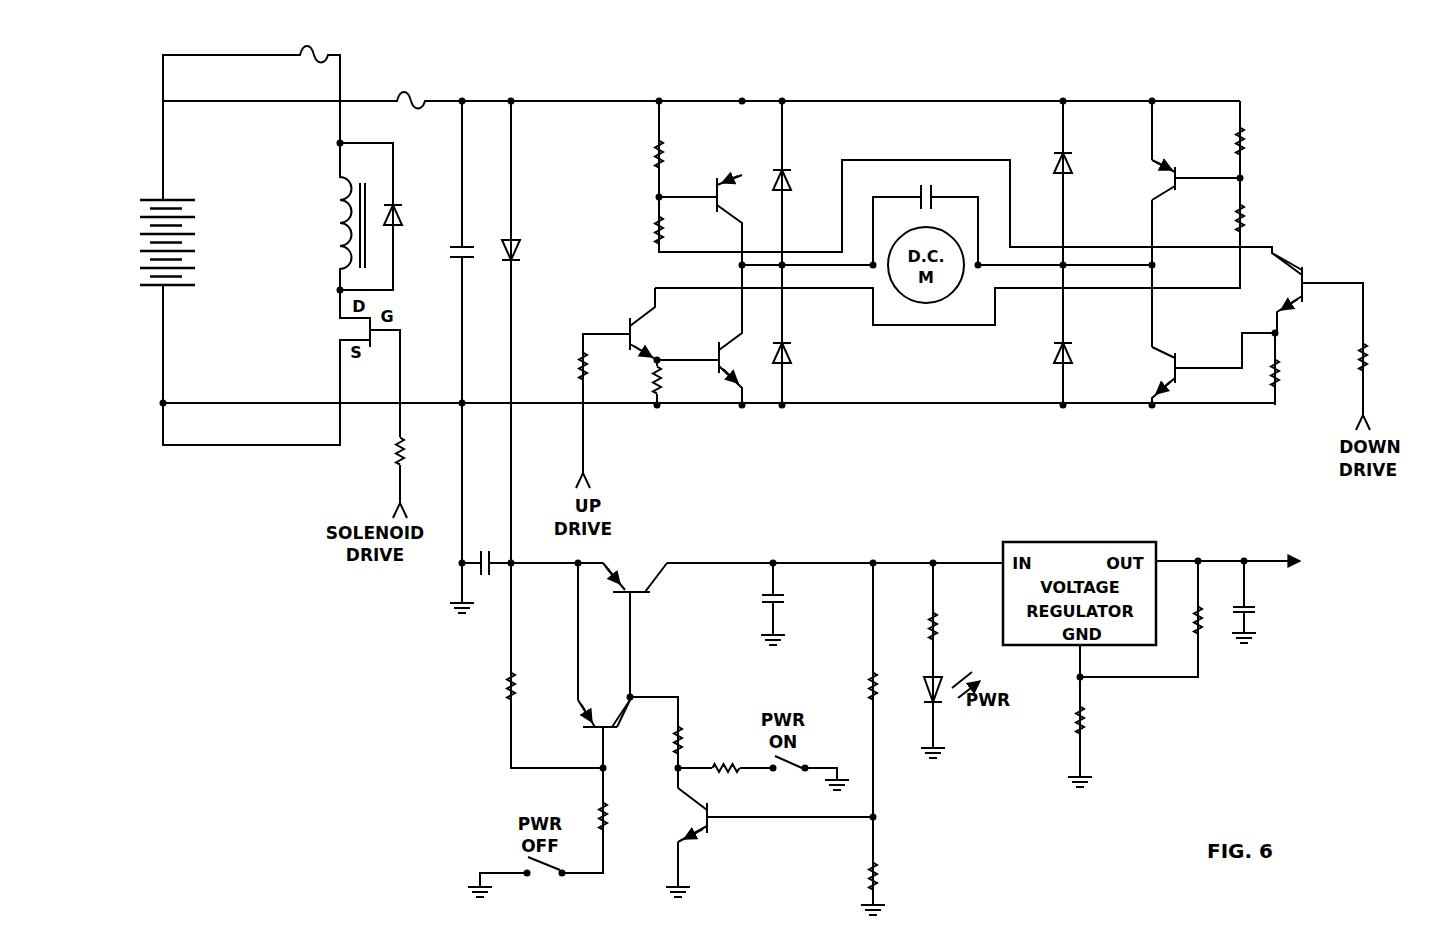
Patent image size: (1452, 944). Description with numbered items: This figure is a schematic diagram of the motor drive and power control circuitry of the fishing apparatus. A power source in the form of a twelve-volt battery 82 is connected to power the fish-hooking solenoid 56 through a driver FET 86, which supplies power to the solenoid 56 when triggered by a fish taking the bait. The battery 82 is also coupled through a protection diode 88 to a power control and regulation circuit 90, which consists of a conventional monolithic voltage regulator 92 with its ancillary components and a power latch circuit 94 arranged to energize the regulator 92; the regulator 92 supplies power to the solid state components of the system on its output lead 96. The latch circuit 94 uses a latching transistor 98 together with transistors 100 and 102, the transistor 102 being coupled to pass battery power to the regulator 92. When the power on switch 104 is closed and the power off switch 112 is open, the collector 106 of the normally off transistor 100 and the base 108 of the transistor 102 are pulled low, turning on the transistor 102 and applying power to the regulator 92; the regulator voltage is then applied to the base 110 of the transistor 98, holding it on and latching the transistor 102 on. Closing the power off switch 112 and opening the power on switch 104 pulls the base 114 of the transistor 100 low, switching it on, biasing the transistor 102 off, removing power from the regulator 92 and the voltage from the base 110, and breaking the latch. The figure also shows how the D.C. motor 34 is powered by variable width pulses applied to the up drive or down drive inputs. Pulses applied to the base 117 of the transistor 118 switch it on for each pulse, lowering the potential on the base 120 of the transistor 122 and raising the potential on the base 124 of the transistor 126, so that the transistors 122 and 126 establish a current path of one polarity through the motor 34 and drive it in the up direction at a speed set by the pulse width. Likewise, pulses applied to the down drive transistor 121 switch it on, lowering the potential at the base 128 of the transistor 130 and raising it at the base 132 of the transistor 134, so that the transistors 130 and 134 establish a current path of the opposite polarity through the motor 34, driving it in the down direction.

The D.C. motor 34 is at (935, 303).
The fish-hooking solenoid 56 is at (337, 217).
The battery 82 is at (205, 272).
The driver FET 86 is at (337, 326).
The protection diode 88 is at (516, 262).
The power control and regulation circuit 90 is at (988, 821).
The voltage regulator 92 is at (1066, 544).
The power latch circuit 94 is at (725, 734).
The output lead 96 is at (1215, 563).
The latching transistor 98 is at (712, 836).
The transistor 100 is at (603, 716).
The transistor 102 is at (653, 598).
The power on switch 104 is at (799, 756).
The collector 106 is at (625, 712).
The base 108 is at (636, 602).
The base 110 is at (713, 812).
The power off switch 112 is at (543, 882).
The base 114 is at (598, 735).
The base 117 is at (626, 334).
The transistor 118 is at (626, 317).
The base 120 is at (1188, 176).
The down drive transistor 121 is at (1310, 260).
The transistor 122 is at (1158, 178).
The base 124 is at (718, 358).
The transistor 126 is at (720, 338).
The base 128 is at (710, 200).
The transistor 130 is at (726, 176).
The base 132 is at (1192, 366).
The transistor 134 is at (1160, 368).